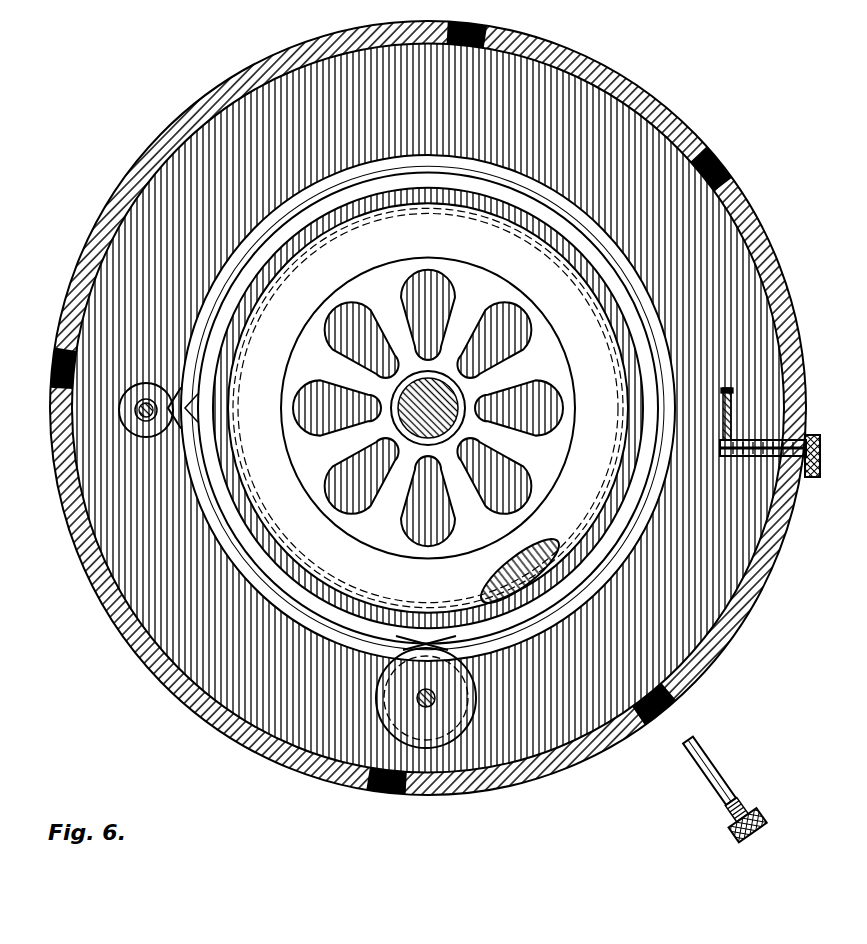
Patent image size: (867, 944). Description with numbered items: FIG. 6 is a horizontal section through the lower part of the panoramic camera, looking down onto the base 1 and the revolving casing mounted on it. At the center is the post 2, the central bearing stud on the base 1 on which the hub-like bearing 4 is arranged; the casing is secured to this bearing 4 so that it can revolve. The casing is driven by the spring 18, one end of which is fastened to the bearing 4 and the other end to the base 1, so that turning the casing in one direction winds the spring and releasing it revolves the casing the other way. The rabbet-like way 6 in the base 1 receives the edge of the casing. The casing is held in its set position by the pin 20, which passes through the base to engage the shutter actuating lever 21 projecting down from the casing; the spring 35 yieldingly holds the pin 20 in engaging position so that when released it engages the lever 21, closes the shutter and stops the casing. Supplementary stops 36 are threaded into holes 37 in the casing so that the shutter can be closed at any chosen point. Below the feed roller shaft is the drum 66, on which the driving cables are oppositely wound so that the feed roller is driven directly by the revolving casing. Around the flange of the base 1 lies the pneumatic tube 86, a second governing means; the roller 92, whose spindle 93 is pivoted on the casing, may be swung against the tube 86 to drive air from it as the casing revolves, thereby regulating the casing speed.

The base 1 is at (622, 135).
The post 2 is at (392, 412).
The bearing 4 is at (410, 428).
The rabbet-like way 6 is at (399, 604).
The spring 18 is at (390, 506).
The pin 20 is at (800, 470).
The shutter actuating lever 21 is at (722, 385).
The spring 35 is at (745, 430).
The supplementary stops 36 is at (700, 772).
The holes 37 is at (380, 780).
The drum 66 is at (395, 712).
The pneumatic tube 86 is at (205, 530).
The roller 92 is at (130, 415).
The spindle 93 is at (135, 420).